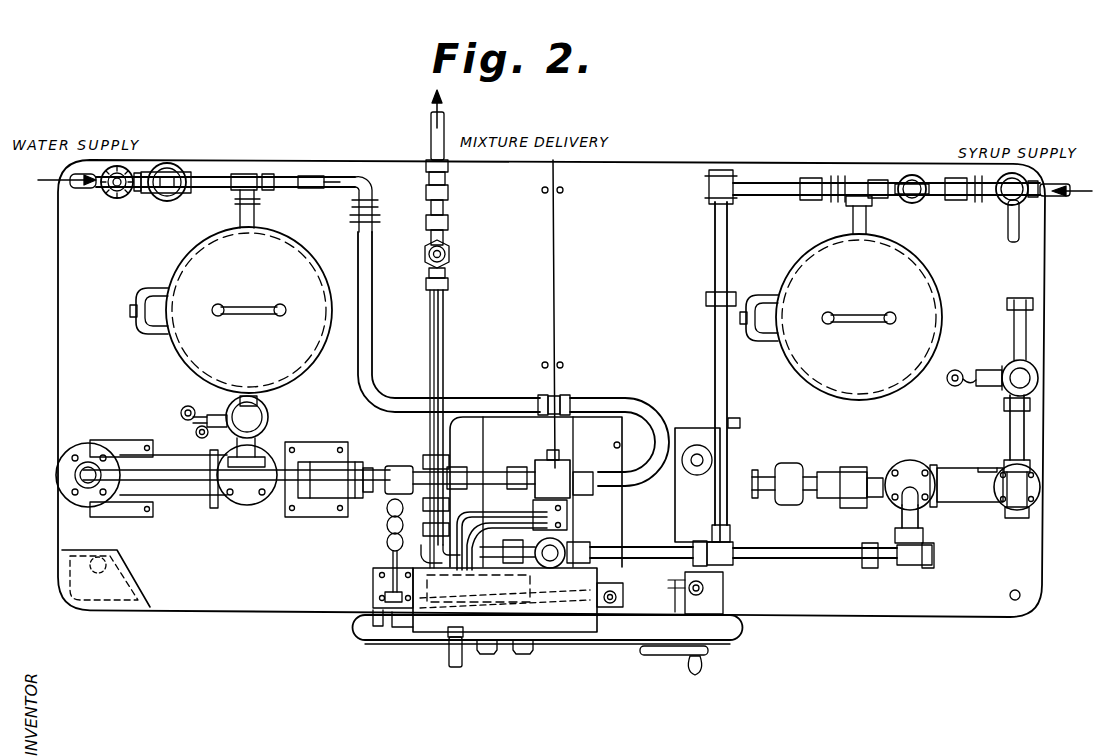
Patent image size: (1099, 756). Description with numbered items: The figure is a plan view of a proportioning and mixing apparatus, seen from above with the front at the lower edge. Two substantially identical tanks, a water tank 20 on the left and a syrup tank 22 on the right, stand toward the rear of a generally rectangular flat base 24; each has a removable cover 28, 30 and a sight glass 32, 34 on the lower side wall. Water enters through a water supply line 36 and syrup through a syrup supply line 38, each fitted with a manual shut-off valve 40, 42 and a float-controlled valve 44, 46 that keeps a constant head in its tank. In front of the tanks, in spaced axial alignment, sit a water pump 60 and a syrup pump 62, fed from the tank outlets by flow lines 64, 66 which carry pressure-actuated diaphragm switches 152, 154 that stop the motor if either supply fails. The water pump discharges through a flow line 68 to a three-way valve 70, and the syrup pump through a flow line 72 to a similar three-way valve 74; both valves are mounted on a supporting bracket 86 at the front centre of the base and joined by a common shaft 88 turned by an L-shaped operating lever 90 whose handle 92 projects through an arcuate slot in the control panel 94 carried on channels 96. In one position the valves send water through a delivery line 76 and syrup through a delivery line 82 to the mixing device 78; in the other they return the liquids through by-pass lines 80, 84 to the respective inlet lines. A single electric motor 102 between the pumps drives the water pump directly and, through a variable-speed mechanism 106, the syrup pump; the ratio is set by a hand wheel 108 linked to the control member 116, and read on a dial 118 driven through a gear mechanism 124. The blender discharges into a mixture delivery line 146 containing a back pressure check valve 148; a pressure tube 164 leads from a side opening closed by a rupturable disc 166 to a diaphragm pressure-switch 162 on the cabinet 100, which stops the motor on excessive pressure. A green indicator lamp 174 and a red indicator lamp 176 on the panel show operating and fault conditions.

The water tank 20 is at (176, 263).
The syrup tank 22 is at (915, 262).
The base 24 is at (58, 331).
The removable cover 28 is at (225, 270).
The removable cover 30 is at (918, 292).
The sight glass 32 is at (157, 327).
The sight glass 34 is at (765, 303).
The water supply line 36 is at (83, 190).
The syrup supply line 38 is at (1055, 198).
The shut-off valve 40 is at (117, 199).
The shut-off valve 42 is at (998, 200).
The float-controlled valve 44 is at (170, 168).
The float-controlled valve 46 is at (908, 176).
The water pump 60 is at (180, 505).
The syrup pump 62 is at (957, 507).
The flow line 64 is at (258, 455).
The flow line 66 is at (1010, 440).
The flow line 68 is at (192, 480).
The three-way valve 70 is at (540, 466).
The flow line 72 is at (810, 562).
The three-way valve 74 is at (566, 542).
The delivery line 76 is at (478, 468).
The mixing device 78 is at (445, 350).
The by-pass line 80 is at (470, 400).
The delivery line 82 is at (488, 555).
The by-pass line 84 is at (715, 330).
The supporting bracket 86 is at (560, 598).
The common shaft 88 is at (568, 516).
The L-shaped operating lever 90 is at (522, 512).
The handle 92 is at (449, 660).
The control panel 94 is at (606, 652).
The channels 96 is at (378, 622).
The cabinet 100 is at (510, 583).
The electric motor 102 is at (450, 431).
The variable-speed mechanism 106 is at (686, 426).
The hand wheel 108 is at (660, 656).
The control member 116 is at (712, 565).
The dial 118 is at (707, 630).
The gear mechanism 124 is at (666, 585).
The mixture delivery line 146 is at (430, 140).
The back pressure check valve 148 is at (448, 192).
The diaphragm switch 152 is at (266, 408).
The diaphragm switch 154 is at (1008, 392).
The diaphragm pressure-switch 162 is at (610, 585).
The pressure tube 164 is at (430, 338).
The rupturable disc 166 is at (448, 255).
The green indicator lamp 174 is at (490, 655).
The red indicator lamp 176 is at (526, 655).